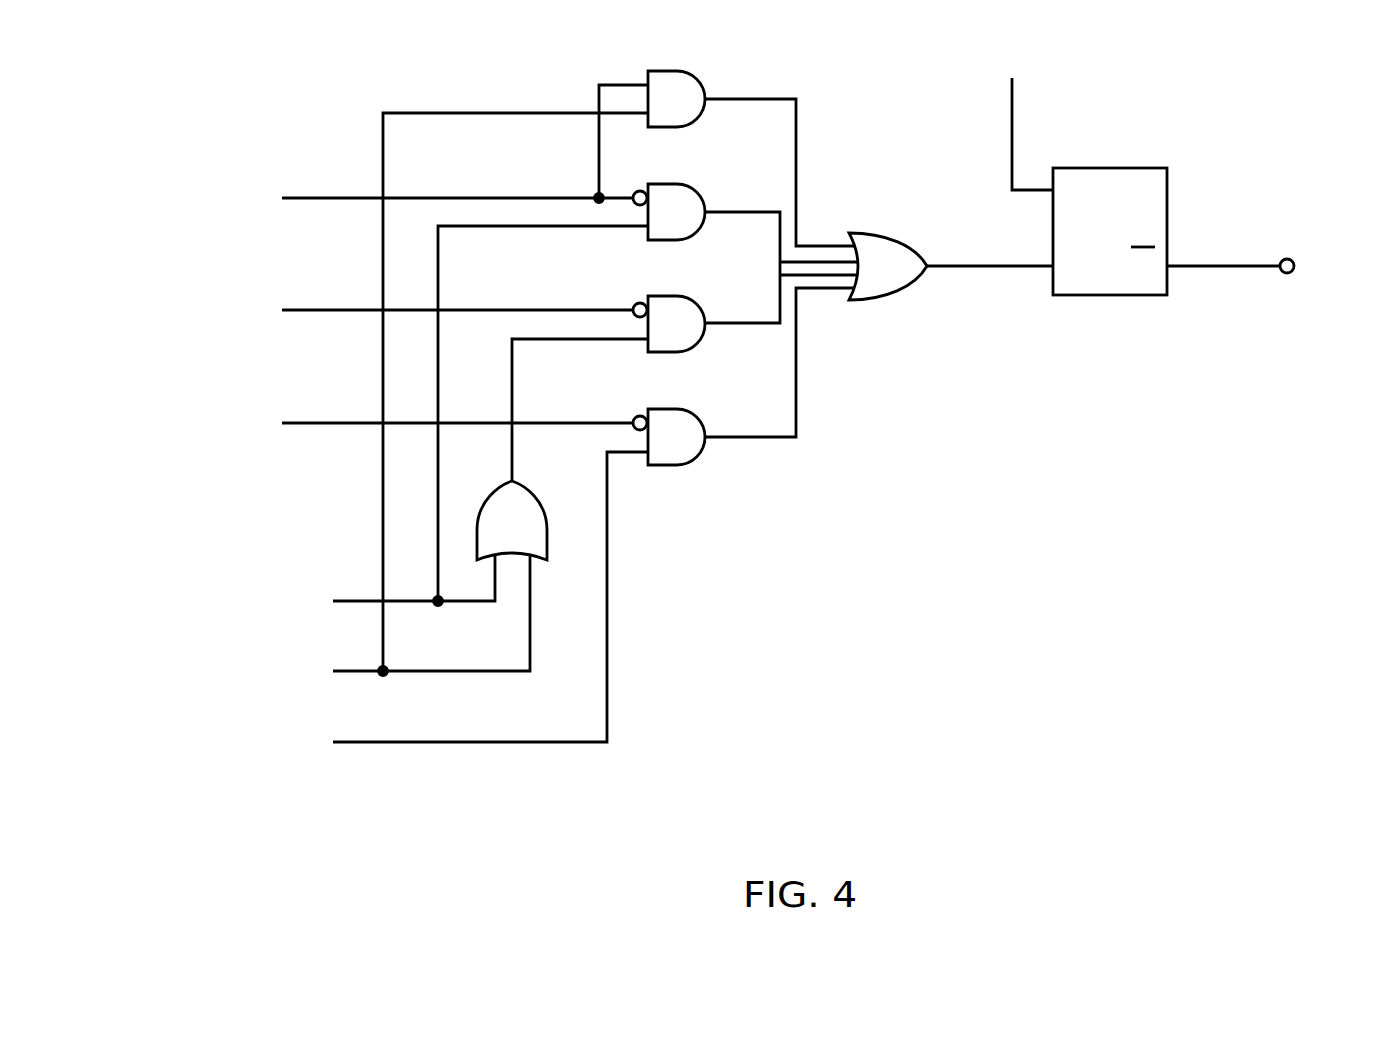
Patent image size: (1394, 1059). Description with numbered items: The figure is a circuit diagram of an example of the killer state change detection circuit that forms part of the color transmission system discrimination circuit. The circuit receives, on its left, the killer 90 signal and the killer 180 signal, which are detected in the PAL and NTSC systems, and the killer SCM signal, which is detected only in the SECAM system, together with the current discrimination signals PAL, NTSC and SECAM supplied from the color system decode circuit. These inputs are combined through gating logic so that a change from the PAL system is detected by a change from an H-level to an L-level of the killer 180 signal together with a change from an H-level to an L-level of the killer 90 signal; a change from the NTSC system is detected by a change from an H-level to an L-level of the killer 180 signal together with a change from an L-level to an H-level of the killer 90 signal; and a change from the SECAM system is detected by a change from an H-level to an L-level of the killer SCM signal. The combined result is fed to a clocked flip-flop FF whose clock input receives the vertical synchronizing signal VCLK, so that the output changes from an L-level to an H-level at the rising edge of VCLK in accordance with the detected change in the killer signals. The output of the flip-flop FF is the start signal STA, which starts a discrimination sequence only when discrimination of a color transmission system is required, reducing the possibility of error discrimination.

The killer 90 signal 90 is at (396, 151).
The killer 180 signal 180 is at (378, 310).
The killer SCM signal SCM is at (371, 425).
The PAL discrimination signal PAL is at (455, 422).
The NTSC discrimination signal NTSC is at (441, 400).
The SECAM discrimination signal SECAM is at (429, 606).
The vertical synchronizing signal VCLK is at (1009, 112).
The start signal STA is at (1268, 263).
The D flip-flop FF is at (1110, 231).